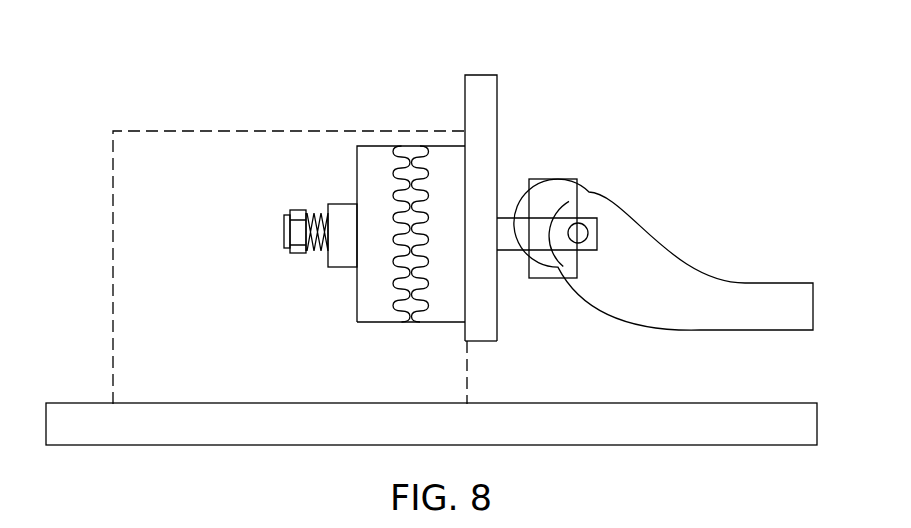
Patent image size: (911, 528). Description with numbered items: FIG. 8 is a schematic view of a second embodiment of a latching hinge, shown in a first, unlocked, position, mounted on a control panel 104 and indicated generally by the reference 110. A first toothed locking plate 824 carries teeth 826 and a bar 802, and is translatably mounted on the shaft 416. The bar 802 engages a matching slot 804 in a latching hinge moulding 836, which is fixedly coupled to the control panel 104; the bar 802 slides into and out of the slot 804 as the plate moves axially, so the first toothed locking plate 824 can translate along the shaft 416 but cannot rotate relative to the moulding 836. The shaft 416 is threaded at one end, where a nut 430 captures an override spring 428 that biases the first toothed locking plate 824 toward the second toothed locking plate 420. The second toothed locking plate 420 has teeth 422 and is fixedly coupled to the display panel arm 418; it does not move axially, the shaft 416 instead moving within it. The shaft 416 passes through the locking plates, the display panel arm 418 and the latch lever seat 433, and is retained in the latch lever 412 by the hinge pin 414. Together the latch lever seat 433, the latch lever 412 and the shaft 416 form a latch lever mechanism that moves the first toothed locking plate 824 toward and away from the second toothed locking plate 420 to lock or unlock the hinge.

The control panel 104 is at (673, 417).
The assembly 110 is at (259, 118).
The latch lever 412 is at (805, 309).
The hinge pin 414 is at (578, 233).
The shaft 416 is at (515, 230).
The display panel arm 418 is at (490, 283).
The second toothed locking plate 420 is at (448, 152).
The teeth 422 is at (423, 303).
The override spring 428 is at (310, 211).
The nut 430 is at (297, 250).
The latch lever seat 433 is at (557, 187).
The bar 802 is at (342, 258).
The slot 804 is at (338, 203).
The first toothed locking plate 824 is at (370, 150).
The teeth 826 is at (397, 310).
The latching hinge moulding 836 is at (112, 298).